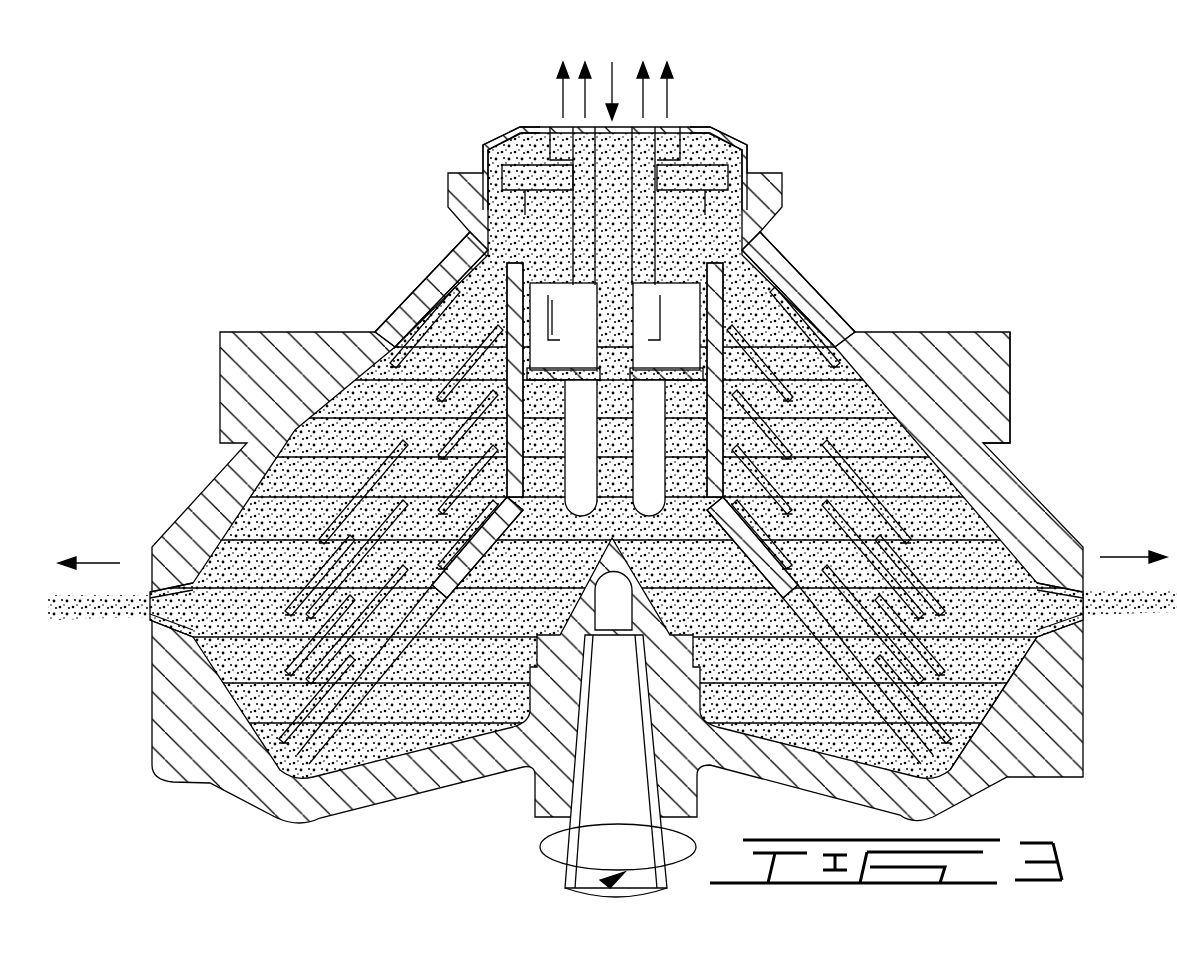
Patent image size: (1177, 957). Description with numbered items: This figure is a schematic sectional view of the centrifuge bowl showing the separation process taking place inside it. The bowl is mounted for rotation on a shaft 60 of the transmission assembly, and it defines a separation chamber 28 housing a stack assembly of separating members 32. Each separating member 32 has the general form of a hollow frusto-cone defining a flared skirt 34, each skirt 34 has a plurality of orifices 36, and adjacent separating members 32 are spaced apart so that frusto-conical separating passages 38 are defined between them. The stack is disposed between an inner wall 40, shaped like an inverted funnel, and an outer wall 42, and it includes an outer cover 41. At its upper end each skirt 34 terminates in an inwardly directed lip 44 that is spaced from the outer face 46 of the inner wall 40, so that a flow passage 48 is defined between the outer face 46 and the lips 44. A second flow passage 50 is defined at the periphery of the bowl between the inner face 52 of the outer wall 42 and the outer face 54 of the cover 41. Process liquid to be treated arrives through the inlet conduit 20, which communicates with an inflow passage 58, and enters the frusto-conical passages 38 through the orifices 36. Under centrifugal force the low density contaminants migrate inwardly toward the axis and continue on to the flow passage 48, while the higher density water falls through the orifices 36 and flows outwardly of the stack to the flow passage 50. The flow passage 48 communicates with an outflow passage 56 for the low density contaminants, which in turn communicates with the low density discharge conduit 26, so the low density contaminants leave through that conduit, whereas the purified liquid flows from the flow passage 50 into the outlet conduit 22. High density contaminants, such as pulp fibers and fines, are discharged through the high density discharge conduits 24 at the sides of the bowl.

The inlet conduit 20 is at (637, 130).
The outlet conduit 22 is at (650, 147).
The high density discharge conduits 24 is at (150, 593).
The low density discharge conduit 26 is at (653, 135).
The separation chamber 28 is at (240, 702).
The separating members 32 is at (920, 712).
The flared skirt 34 is at (1007, 517).
The orifices 36 is at (403, 363).
The frusto-conical separating passages 38 is at (300, 530).
The inner wall 40 is at (743, 290).
The outer cover 41 is at (960, 487).
The outer wall 42 is at (850, 353).
The inwardly directed lip 44 is at (470, 290).
The outer face of inner wall 46 is at (500, 305).
The flow passage 48 is at (813, 313).
The flow passage 50 is at (873, 380).
The inner face of outer wall 52 is at (827, 350).
The outer face of cover 54 is at (900, 367).
The outflow passage 56 is at (665, 175).
The inflow passage 58 is at (607, 130).
The shaft 60 is at (575, 842).